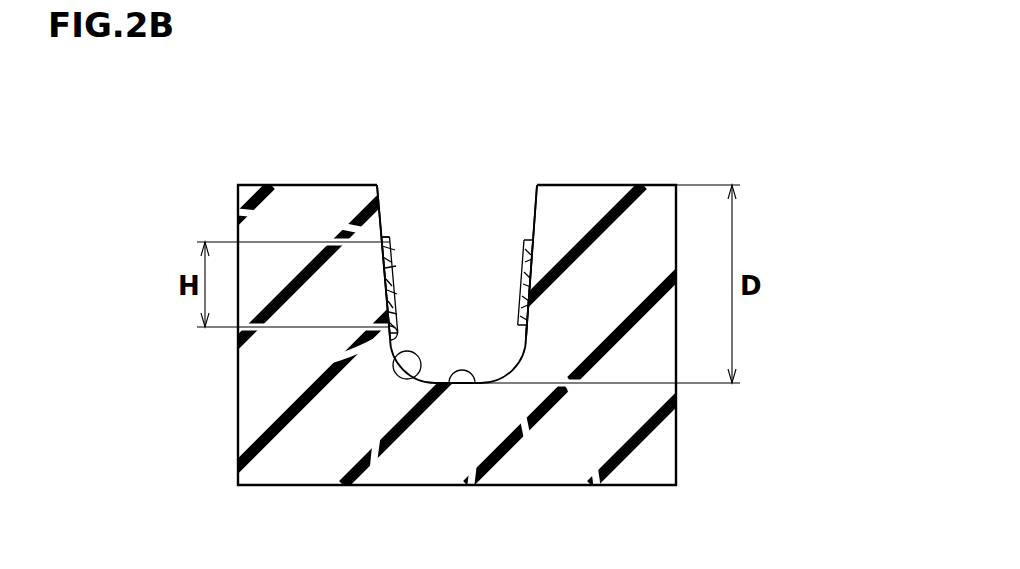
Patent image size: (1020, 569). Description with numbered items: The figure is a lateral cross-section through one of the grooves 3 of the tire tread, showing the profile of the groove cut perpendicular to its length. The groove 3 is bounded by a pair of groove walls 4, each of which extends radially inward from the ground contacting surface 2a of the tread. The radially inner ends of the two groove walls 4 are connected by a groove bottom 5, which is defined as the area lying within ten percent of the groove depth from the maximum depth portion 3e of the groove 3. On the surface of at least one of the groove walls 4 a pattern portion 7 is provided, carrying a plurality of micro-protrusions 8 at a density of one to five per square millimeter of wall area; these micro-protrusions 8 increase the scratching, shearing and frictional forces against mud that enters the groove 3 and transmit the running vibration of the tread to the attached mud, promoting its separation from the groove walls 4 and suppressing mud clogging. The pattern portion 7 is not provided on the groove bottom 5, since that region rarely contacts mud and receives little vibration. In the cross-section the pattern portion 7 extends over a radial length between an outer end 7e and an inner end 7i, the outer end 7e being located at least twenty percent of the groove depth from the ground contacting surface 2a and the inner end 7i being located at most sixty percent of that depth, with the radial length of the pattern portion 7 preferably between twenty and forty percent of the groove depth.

The ground contacting surface 2a is at (307, 185).
The groove 3 is at (458, 142).
The maximum depth portion 3e is at (475, 385).
The groove wall 4 is at (381, 212).
The groove bottom 5 is at (398, 370).
The pattern portion 7 is at (513, 298).
The outer end of the pattern portion 7e is at (386, 236).
The inner end of the pattern portion 7i is at (388, 334).
The micro-protrusion 8 is at (527, 325).